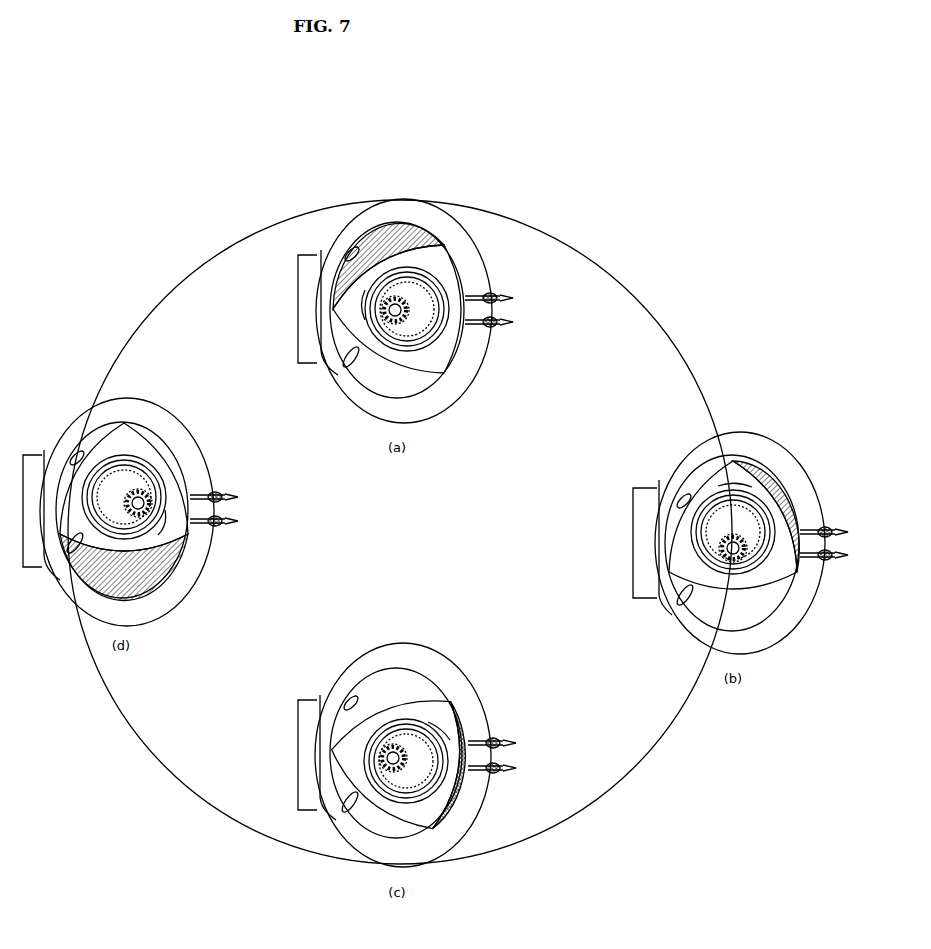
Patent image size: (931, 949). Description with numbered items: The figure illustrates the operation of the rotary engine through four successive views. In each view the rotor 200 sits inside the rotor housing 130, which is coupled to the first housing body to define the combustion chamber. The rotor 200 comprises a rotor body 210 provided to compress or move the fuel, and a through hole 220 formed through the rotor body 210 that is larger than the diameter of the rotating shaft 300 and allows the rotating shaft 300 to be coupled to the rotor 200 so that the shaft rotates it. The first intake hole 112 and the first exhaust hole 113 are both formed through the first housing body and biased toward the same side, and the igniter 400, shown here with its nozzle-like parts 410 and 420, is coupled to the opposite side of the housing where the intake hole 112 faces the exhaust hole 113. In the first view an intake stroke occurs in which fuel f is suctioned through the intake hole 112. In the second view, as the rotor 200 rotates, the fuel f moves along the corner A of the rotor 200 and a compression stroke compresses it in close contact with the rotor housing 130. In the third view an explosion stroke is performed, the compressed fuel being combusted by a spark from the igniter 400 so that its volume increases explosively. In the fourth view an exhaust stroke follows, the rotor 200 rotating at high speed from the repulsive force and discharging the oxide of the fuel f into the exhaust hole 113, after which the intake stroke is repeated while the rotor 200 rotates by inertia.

The first intake hole 112 is at (338, 257).
The first exhaust hole 113 is at (345, 283).
The rotor housing 130 is at (475, 355).
The rotor 200 is at (398, 262).
The rotor body 210 is at (420, 712).
The through hole 220 is at (372, 727).
The rotating shaft 300 is at (392, 738).
The igniter 400 is at (497, 325).
The first injector 410 is at (503, 741).
The second injector 420 is at (516, 768).
The fuel f is at (380, 236).
The corner of the rotor A is at (442, 247).